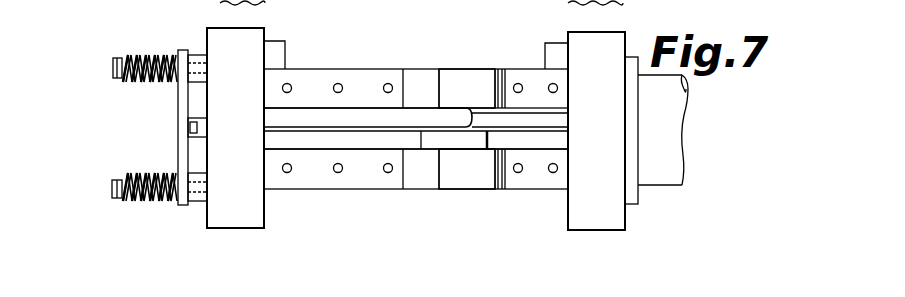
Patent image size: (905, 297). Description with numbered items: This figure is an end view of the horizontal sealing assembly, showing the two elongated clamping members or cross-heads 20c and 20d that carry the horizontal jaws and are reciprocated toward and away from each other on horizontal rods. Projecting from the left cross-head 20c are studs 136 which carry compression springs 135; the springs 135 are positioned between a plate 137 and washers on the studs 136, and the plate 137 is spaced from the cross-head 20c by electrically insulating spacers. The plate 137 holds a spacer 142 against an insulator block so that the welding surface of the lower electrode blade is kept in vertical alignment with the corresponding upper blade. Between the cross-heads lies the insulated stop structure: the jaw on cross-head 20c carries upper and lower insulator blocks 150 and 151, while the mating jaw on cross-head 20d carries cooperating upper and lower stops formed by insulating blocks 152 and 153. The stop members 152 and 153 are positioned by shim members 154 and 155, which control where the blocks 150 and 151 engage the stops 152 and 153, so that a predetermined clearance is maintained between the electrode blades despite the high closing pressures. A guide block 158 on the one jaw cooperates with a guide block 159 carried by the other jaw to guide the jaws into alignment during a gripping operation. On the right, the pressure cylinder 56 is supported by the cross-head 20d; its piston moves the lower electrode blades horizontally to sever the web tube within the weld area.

The cross-head 20c is at (250, 32).
The cross-head 20d is at (611, 37).
The pressure cylinder 56 is at (675, 155).
The compression spring 135 is at (150, 113).
The stud 136 is at (113, 67).
The plate 137 is at (182, 104).
The spacer 142 is at (192, 126).
The upper insulator block 150 is at (413, 73).
The lower insulator block 151 is at (413, 178).
The insulating block stop member 152 is at (472, 68).
The insulating block stop member 153 is at (479, 192).
The shim member 154 is at (500, 69).
The shim member 155 is at (498, 191).
The guide block 158 is at (367, 120).
The guide block 159 is at (430, 140).